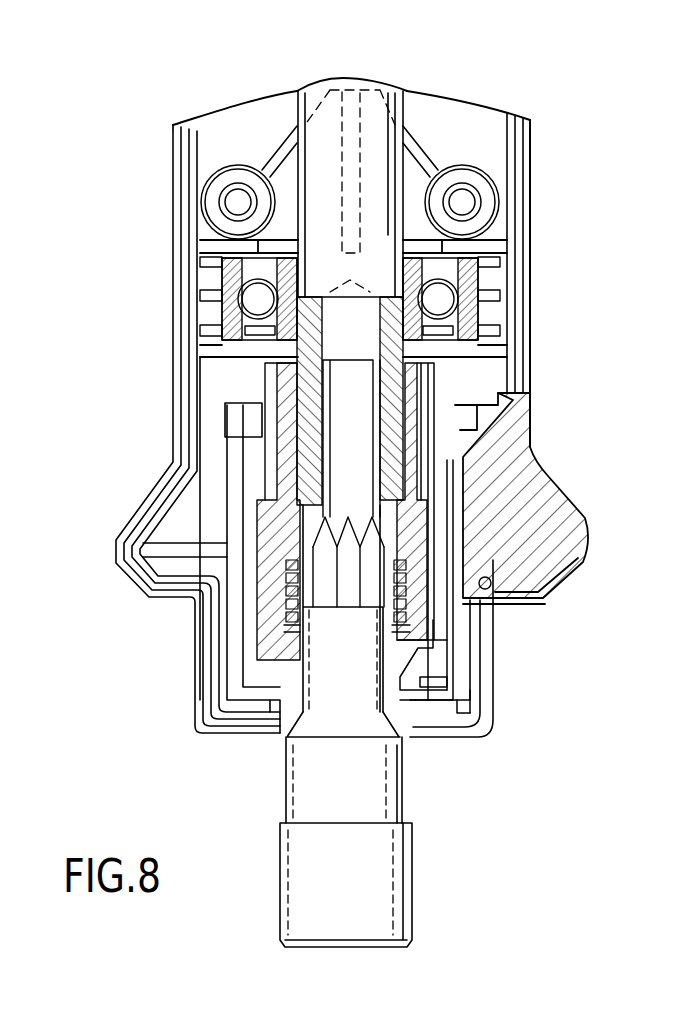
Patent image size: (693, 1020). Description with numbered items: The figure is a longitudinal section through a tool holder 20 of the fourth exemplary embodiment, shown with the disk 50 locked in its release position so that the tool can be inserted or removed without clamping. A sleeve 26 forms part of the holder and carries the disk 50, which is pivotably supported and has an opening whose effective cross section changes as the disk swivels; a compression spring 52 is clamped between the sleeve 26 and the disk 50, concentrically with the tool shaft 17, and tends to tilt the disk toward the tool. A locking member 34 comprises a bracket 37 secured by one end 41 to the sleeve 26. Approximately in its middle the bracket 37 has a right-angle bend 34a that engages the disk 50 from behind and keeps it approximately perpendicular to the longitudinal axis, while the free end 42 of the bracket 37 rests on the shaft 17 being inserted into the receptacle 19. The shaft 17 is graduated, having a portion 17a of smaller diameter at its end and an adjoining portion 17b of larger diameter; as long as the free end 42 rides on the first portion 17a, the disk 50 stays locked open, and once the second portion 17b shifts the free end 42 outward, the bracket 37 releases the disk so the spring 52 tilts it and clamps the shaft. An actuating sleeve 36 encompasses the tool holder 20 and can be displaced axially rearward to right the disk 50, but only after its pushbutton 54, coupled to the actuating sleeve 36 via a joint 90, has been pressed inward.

The tool holder 20 is at (565, 347).
The receptacle 19 is at (365, 418).
The end of bracket 41 is at (456, 470).
The pushbutton 54 is at (513, 480).
The sleeve 26 is at (410, 522).
The compression spring 52 is at (408, 565).
The bracket 37 is at (410, 585).
The joint 90 is at (540, 600).
The disk 50 is at (435, 633).
The right-angle bend 34a is at (450, 682).
The locking member 34 is at (463, 697).
The free end of bracket 42 is at (457, 730).
The actuating sleeve 36 is at (233, 480).
The first portion of smaller diameter 17a is at (318, 662).
The second portion of larger diameter 17b is at (318, 782).
The tool shaft 17 is at (383, 866).